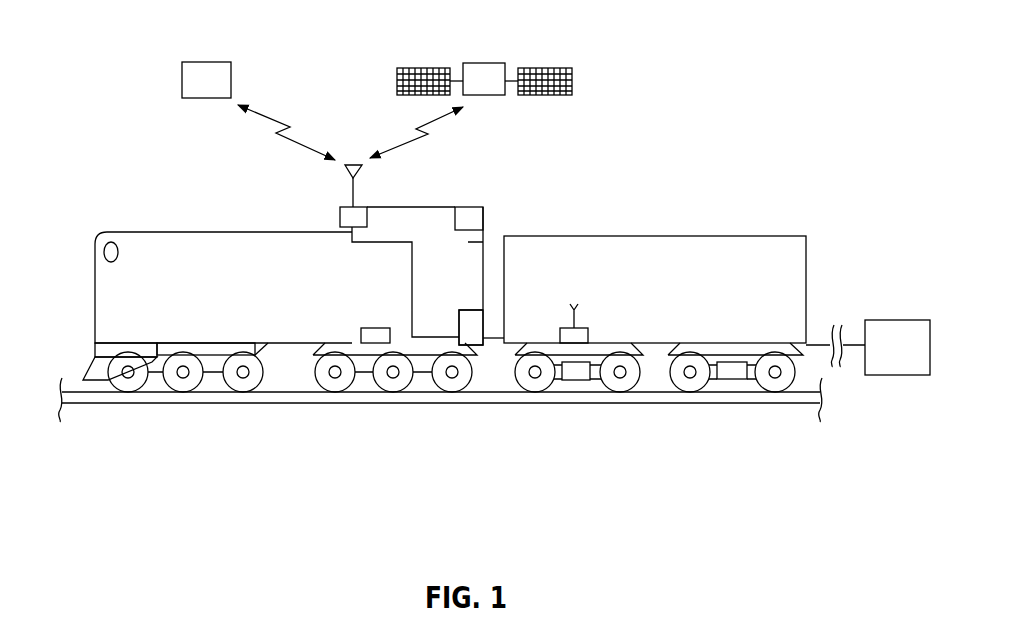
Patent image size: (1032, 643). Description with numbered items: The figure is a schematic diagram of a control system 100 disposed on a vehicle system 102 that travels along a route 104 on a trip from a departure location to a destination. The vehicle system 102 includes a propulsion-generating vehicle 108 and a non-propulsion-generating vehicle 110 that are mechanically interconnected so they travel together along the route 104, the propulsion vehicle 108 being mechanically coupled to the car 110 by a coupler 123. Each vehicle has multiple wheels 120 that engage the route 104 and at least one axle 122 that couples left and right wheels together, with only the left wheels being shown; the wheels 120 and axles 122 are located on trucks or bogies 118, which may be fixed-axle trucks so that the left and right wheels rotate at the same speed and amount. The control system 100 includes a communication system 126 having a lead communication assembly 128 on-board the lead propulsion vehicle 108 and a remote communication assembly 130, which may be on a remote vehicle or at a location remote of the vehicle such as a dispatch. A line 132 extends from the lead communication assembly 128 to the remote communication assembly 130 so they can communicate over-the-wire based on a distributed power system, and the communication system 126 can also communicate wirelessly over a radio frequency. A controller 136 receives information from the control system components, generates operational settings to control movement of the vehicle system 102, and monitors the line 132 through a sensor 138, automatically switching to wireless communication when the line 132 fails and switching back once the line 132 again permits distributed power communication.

The control system 100 is at (235, 185).
The vehicle system 102 is at (655, 267).
The route 104 is at (100, 412).
The propulsion-generating vehicle 108 is at (208, 232).
The non-propulsion-generating vehicle 110 is at (685, 299).
The truck 118 is at (420, 350).
The wheel 120 is at (320, 382).
The axle 122 is at (335, 378).
The coupler 123 is at (503, 338).
The communication system 126 is at (365, 193).
The lead communication assembly 128 is at (340, 215).
The remote communication assembly 130 is at (208, 62).
The line 132 is at (818, 342).
The controller 136 is at (465, 207).
The sensor 138 is at (472, 310).